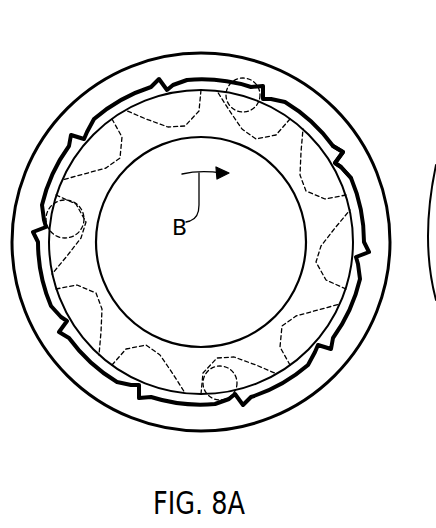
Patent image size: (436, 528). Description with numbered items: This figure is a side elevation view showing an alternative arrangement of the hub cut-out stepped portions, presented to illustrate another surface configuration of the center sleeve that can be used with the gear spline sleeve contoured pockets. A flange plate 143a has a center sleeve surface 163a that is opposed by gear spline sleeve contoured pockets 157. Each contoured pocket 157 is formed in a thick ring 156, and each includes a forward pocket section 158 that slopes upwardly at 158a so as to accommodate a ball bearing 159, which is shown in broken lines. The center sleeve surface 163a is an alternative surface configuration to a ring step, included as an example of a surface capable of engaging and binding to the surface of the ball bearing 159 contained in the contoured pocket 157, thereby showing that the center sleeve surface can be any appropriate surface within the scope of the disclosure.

The flange plate 143a is at (278, 80).
The thick ring 156 is at (325, 225).
The gear spline sleeve contoured pocket 157 is at (352, 185).
The forward pocket section 158 is at (300, 193).
The upward slope 158a is at (313, 150).
The ball bearing 159 is at (238, 100).
The center sleeve surface 163a is at (340, 162).